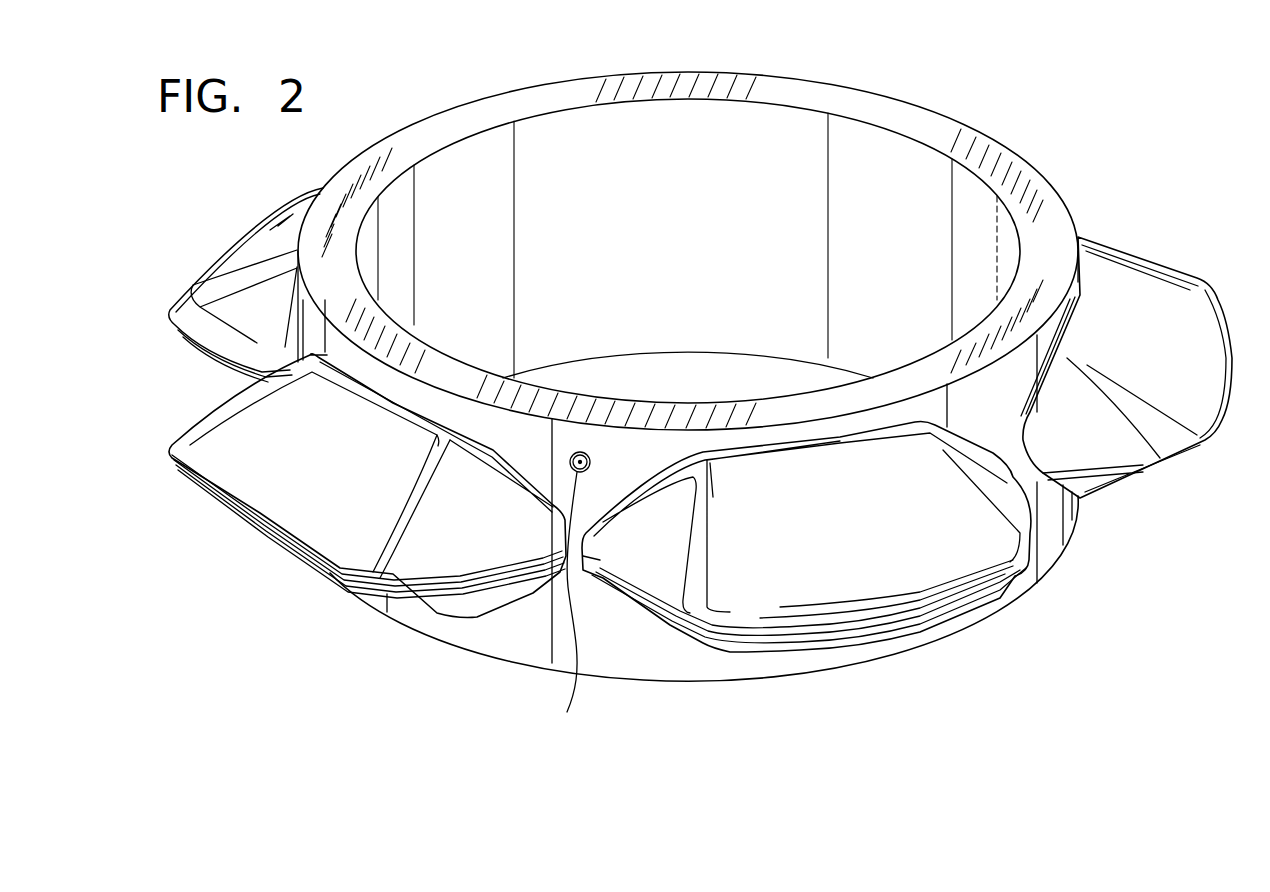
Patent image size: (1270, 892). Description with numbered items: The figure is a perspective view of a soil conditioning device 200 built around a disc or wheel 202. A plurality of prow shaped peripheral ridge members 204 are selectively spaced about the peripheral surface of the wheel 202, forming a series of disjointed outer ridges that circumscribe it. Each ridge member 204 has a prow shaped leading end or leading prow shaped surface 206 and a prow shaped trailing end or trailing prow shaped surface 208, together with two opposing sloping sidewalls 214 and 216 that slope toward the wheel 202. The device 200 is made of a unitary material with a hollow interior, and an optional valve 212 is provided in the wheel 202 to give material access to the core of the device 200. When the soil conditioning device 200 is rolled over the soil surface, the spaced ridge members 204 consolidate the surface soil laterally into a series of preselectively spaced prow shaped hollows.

The soil conditioning device 200 is at (1075, 133).
The wheel 202 is at (975, 148).
The prow shaped peripheral ridge member 204 is at (973, 595).
The leading prow shaped surface 206 is at (453, 543).
The trailing prow shaped surface 208 is at (1103, 442).
The valve 212 is at (571, 596).
The sloping sidewall 214 is at (287, 500).
The sloping sidewall 216 is at (820, 643).